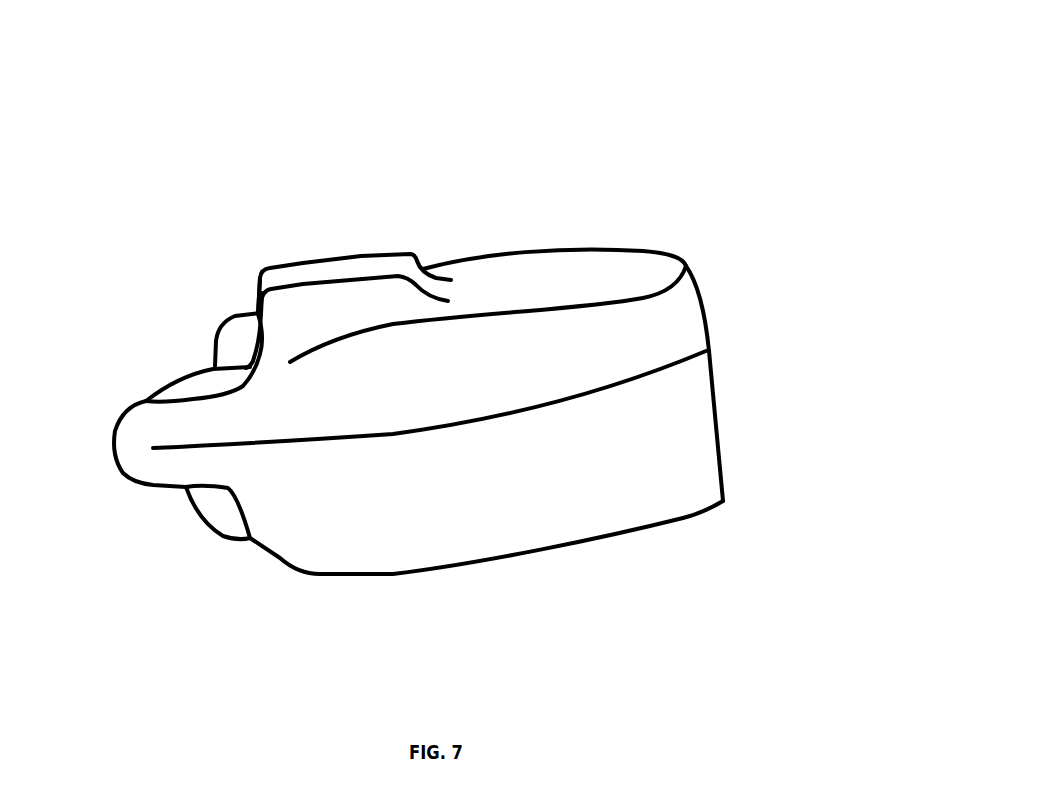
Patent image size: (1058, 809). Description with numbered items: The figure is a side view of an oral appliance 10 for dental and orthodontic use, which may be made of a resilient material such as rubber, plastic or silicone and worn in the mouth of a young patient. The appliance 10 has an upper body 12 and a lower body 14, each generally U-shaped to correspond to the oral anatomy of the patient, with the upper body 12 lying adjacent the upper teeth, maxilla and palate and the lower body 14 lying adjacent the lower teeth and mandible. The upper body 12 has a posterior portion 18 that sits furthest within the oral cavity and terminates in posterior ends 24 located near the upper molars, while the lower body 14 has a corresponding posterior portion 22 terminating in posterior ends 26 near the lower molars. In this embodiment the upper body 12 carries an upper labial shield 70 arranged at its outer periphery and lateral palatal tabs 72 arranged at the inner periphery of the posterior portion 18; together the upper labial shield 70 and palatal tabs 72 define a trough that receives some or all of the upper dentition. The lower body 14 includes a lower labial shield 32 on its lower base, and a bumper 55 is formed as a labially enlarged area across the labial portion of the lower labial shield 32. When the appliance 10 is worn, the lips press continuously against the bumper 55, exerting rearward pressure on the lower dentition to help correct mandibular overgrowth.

The appliance 10 is at (690, 102).
The upper body 12 is at (705, 317).
The lower body 14 is at (378, 540).
The posterior portion 18 is at (188, 418).
The posterior portion 22 is at (157, 460).
The posterior ends 24 is at (125, 403).
The posterior ends 26 is at (110, 467).
The lower labial shield 32 is at (583, 542).
The bumper 55 is at (718, 452).
The upper labial shield 70 is at (547, 247).
The lateral palatal tabs 72 is at (267, 267).